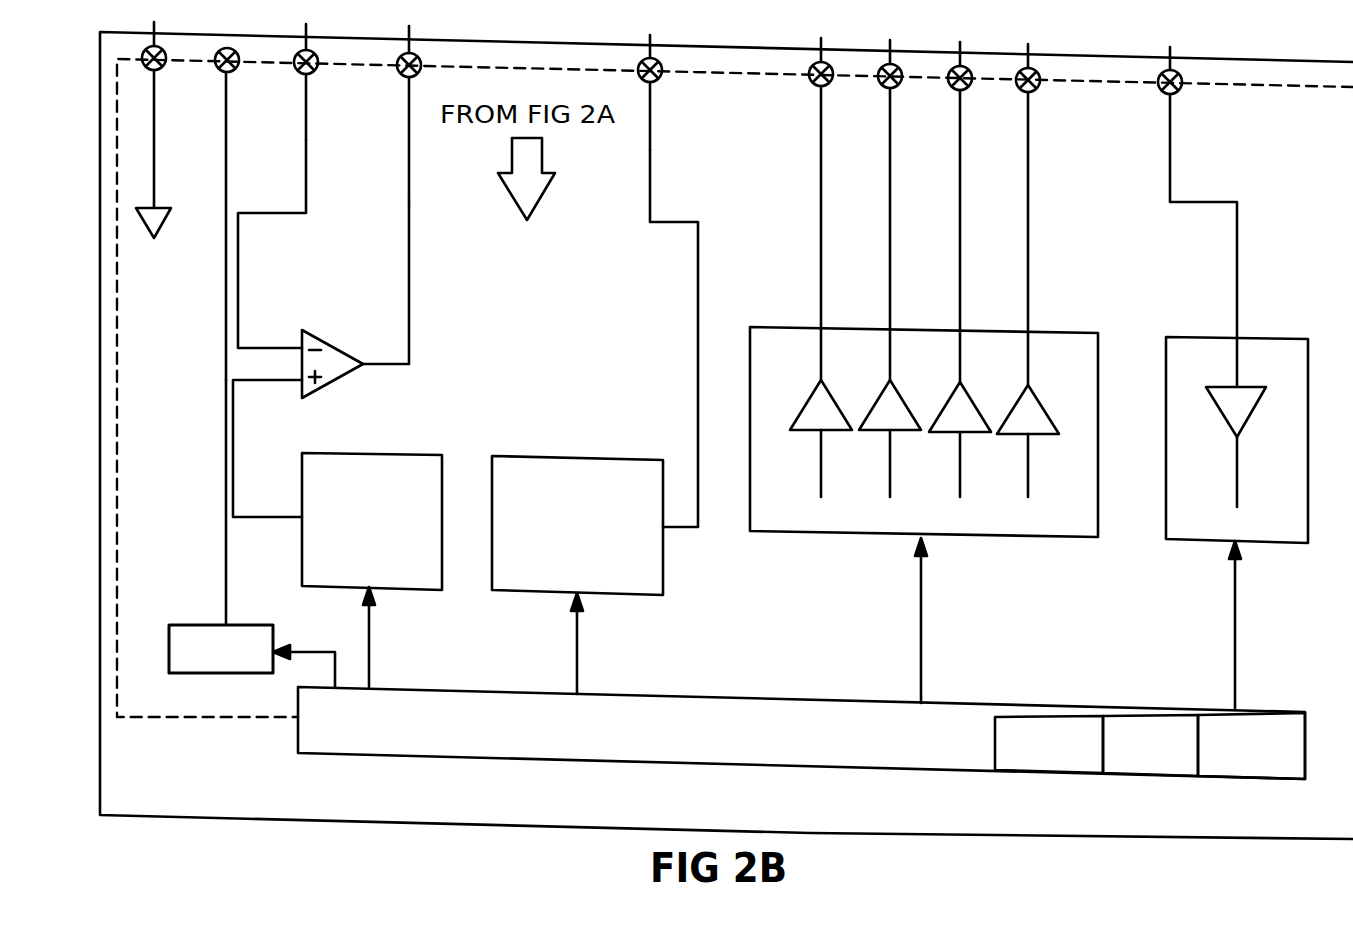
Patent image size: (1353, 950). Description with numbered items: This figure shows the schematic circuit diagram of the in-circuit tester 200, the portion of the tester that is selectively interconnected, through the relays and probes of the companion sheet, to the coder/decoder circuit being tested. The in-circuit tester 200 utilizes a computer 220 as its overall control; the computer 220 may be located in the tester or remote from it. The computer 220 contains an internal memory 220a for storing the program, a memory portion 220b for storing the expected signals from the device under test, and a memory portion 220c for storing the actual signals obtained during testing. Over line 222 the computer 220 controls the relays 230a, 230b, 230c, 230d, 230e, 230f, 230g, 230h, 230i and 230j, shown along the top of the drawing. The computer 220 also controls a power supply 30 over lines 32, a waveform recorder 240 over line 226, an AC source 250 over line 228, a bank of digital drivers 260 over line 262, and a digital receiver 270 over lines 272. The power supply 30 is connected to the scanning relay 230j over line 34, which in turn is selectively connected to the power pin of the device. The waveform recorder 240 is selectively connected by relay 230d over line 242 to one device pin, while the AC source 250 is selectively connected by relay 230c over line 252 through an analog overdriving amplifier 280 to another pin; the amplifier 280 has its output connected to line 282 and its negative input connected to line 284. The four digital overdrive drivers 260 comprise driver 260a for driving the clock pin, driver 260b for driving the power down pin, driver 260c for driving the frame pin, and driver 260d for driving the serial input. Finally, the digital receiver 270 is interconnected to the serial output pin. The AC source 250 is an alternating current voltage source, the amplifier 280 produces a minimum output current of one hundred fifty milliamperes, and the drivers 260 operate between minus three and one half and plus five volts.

The in-circuit tester 200 is at (483, 822).
The computer 220 is at (868, 700).
The internal memory 220a is at (1049, 744).
The memory portion 220b is at (1150, 745).
The memory portion 220c is at (1251, 746).
The line 222 is at (118, 572).
The line 226 is at (578, 660).
The line 228 is at (370, 652).
The power supply 30 is at (200, 625).
The lines 32 is at (312, 653).
The line 34 is at (226, 370).
The relay 230a is at (154, 122).
The relay 230b is at (308, 78).
The relay 230c is at (409, 78).
The relay 230d is at (658, 81).
The relay 230e is at (814, 85).
The relay 230f is at (885, 88).
The relay 230g is at (967, 90).
The relay 230h is at (1036, 92).
The relay 230i is at (1175, 95).
The scanning relay 230j is at (226, 177).
The waveform recorder 240 is at (523, 457).
The line 242 is at (698, 297).
The AC source 250 is at (360, 587).
The line 252 is at (233, 460).
The digital drivers 260 is at (860, 533).
The driver 260a is at (819, 378).
The driver 260b is at (888, 378).
The driver 260c is at (960, 380).
The driver 260d is at (1028, 383).
The line 262 is at (921, 684).
The digital receiver 270 is at (1222, 541).
The lines 272 is at (1235, 692).
The analog overdriving amplifier 280 is at (325, 388).
The line 282 is at (408, 297).
The line 284 is at (258, 213).